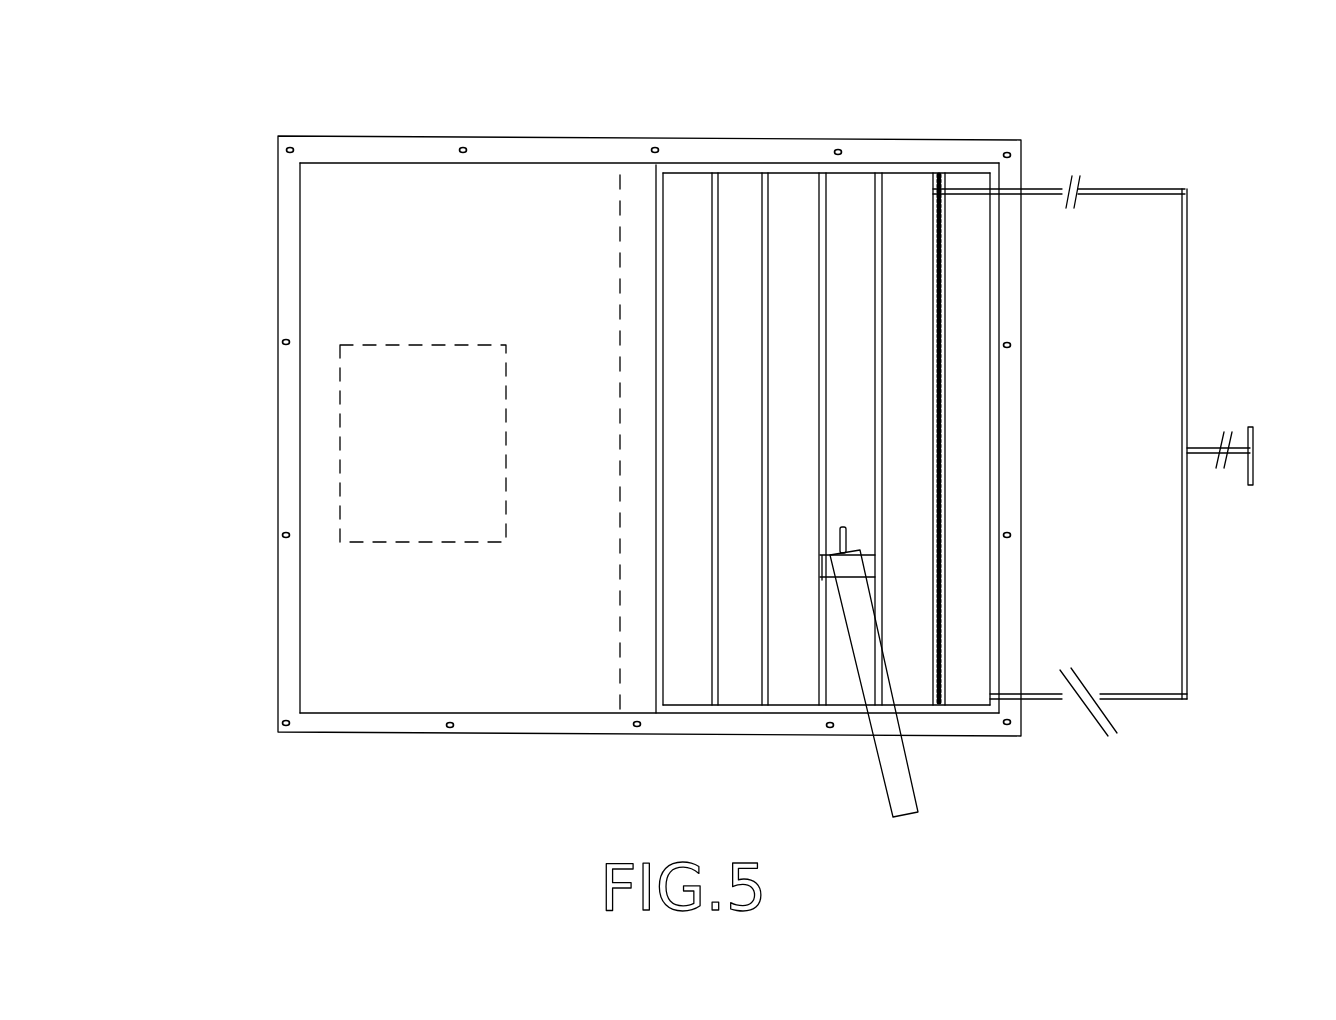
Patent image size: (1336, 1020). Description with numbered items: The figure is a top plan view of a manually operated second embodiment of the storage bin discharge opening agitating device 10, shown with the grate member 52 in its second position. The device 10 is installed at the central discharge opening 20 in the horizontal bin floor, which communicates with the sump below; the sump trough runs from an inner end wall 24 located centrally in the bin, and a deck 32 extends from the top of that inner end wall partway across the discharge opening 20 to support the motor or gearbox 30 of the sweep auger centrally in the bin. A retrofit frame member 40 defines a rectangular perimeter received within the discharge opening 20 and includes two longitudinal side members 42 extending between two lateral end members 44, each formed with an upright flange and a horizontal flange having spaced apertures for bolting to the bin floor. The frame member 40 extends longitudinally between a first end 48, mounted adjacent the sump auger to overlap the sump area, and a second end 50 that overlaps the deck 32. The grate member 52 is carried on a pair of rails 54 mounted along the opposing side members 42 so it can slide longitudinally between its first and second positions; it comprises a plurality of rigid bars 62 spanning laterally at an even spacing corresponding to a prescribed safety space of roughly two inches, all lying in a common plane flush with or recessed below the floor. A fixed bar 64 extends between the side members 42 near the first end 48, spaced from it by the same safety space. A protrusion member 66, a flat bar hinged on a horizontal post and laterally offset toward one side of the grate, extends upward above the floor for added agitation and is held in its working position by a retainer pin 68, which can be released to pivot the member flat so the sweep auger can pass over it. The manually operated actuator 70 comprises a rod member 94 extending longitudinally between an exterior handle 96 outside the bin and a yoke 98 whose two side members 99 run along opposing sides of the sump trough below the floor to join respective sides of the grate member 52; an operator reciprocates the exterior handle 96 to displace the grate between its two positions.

The agitating device 10 is at (126, 128).
The central discharge opening 20 is at (831, 472).
The inner end wall 24 is at (613, 683).
The motor or gearbox 30 is at (400, 543).
The deck 32 is at (480, 521).
The frame member 40 is at (333, 748).
The side members 42 is at (558, 126).
The end members 44 is at (280, 693).
The first end 48 is at (983, 468).
The second end 50 is at (650, 446).
The grate member 52 is at (890, 283).
The rails 54 is at (806, 175).
The rigid bars 62 is at (727, 215).
The fixed bar 64 is at (935, 408).
The protrusion member 66 is at (1065, 672).
The retainer pin 68 is at (846, 530).
The actuator 70 is at (1134, 407).
The rod member 94 is at (1210, 445).
The exterior handle 96 is at (1257, 470).
The yoke 98 is at (1190, 297).
The side members 99 is at (1108, 186).